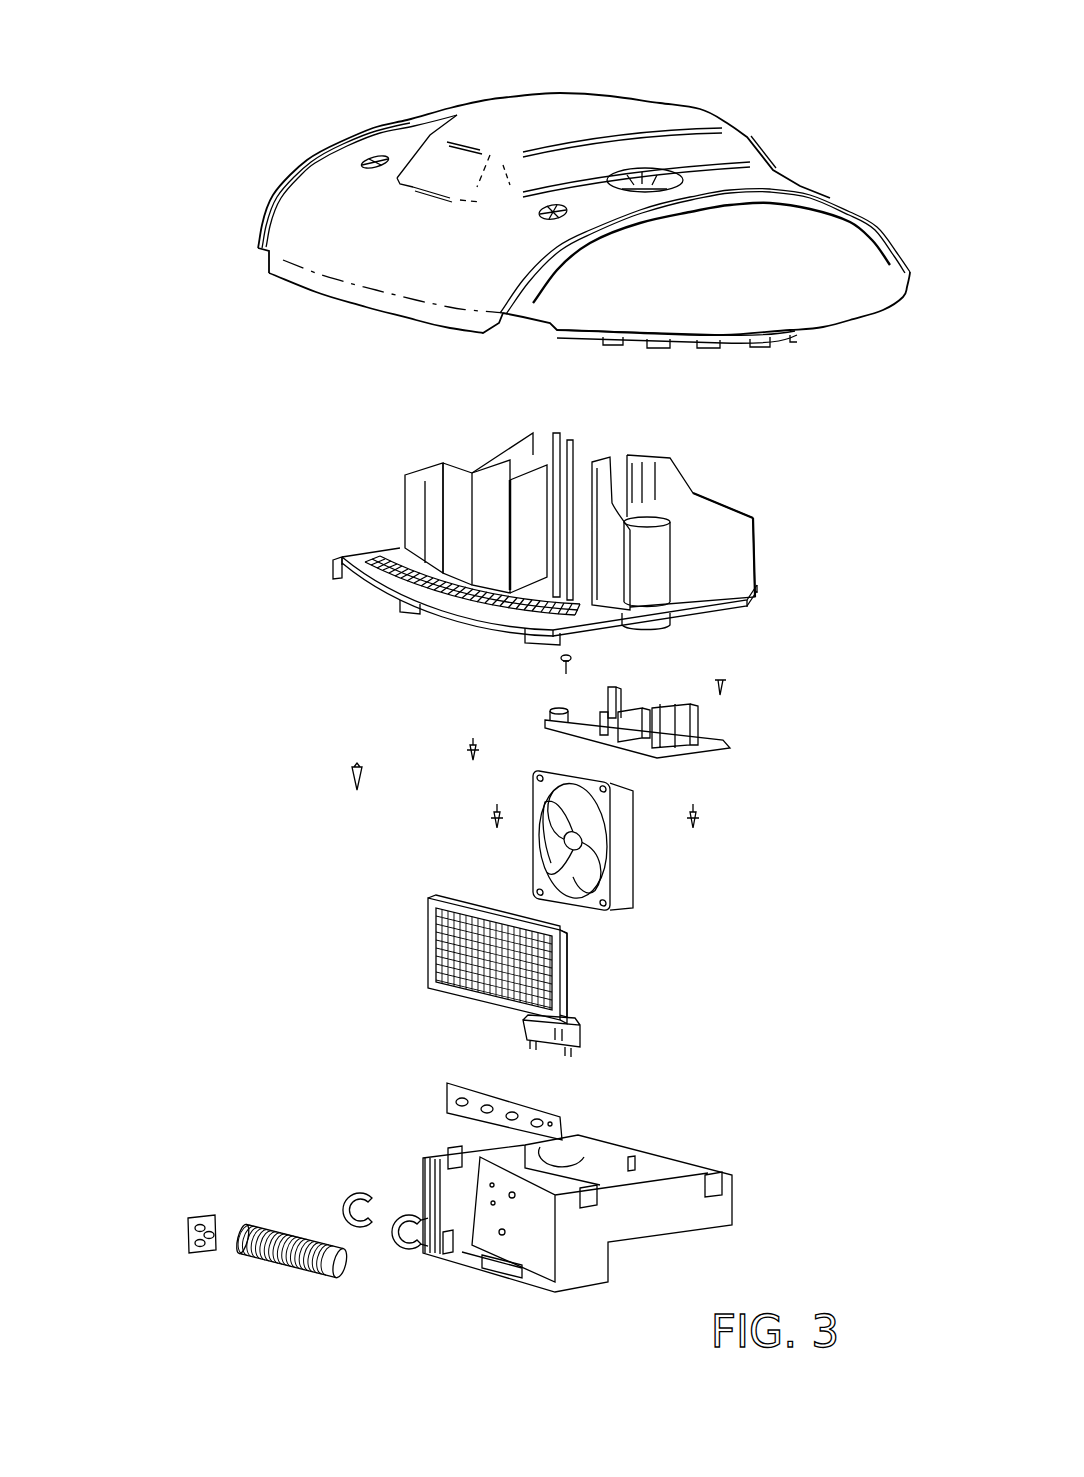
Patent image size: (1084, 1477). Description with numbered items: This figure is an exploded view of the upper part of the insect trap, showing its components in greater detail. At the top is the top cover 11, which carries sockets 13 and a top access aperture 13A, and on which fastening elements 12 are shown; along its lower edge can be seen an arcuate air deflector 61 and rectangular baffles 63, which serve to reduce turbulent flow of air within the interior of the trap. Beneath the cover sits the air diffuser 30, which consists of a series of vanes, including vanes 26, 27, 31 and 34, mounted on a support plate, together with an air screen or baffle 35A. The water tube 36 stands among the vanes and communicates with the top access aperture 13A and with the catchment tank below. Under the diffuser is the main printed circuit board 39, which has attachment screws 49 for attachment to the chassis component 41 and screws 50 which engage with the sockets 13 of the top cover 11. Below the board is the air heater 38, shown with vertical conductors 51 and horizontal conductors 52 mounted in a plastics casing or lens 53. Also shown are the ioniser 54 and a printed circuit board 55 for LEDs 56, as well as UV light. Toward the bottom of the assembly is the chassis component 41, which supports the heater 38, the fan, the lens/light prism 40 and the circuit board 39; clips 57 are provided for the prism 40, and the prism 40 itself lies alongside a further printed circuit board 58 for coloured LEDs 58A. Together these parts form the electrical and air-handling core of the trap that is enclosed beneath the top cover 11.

The top cover 11 is at (517, 216).
The screws 12 is at (369, 157).
The sockets 13 is at (412, 160).
The top access aperture 13A is at (668, 176).
The vane 26 is at (723, 520).
The vane 27 is at (624, 571).
The air diffuser 30 is at (527, 502).
The vane 31 is at (488, 488).
The vane 34 is at (417, 478).
The air screen or baffle 35A is at (384, 560).
The water tube 36 is at (662, 565).
The air heater 38 is at (487, 934).
The main printed circuit board 39 is at (542, 722).
The lens/light prism 40 is at (283, 1275).
The chassis component 41 is at (738, 1208).
The attachment screws 49 is at (558, 660).
The screws 50 is at (350, 774).
The vertical conductors 51 is at (588, 950).
The horizontal conductors 52 is at (573, 982).
The plastics casing or lens 53 is at (462, 905).
The ioniser 54 is at (516, 1029).
The printed circuit board 55 is at (441, 1118).
The LEDs 56 is at (460, 1112).
The clips 57 is at (417, 1262).
The printed circuit board 58 is at (146, 1277).
The coloured LEDs 58A is at (200, 1250).
The arcuate air deflector 61 is at (690, 332).
The rectangular baffles 63 is at (725, 352).